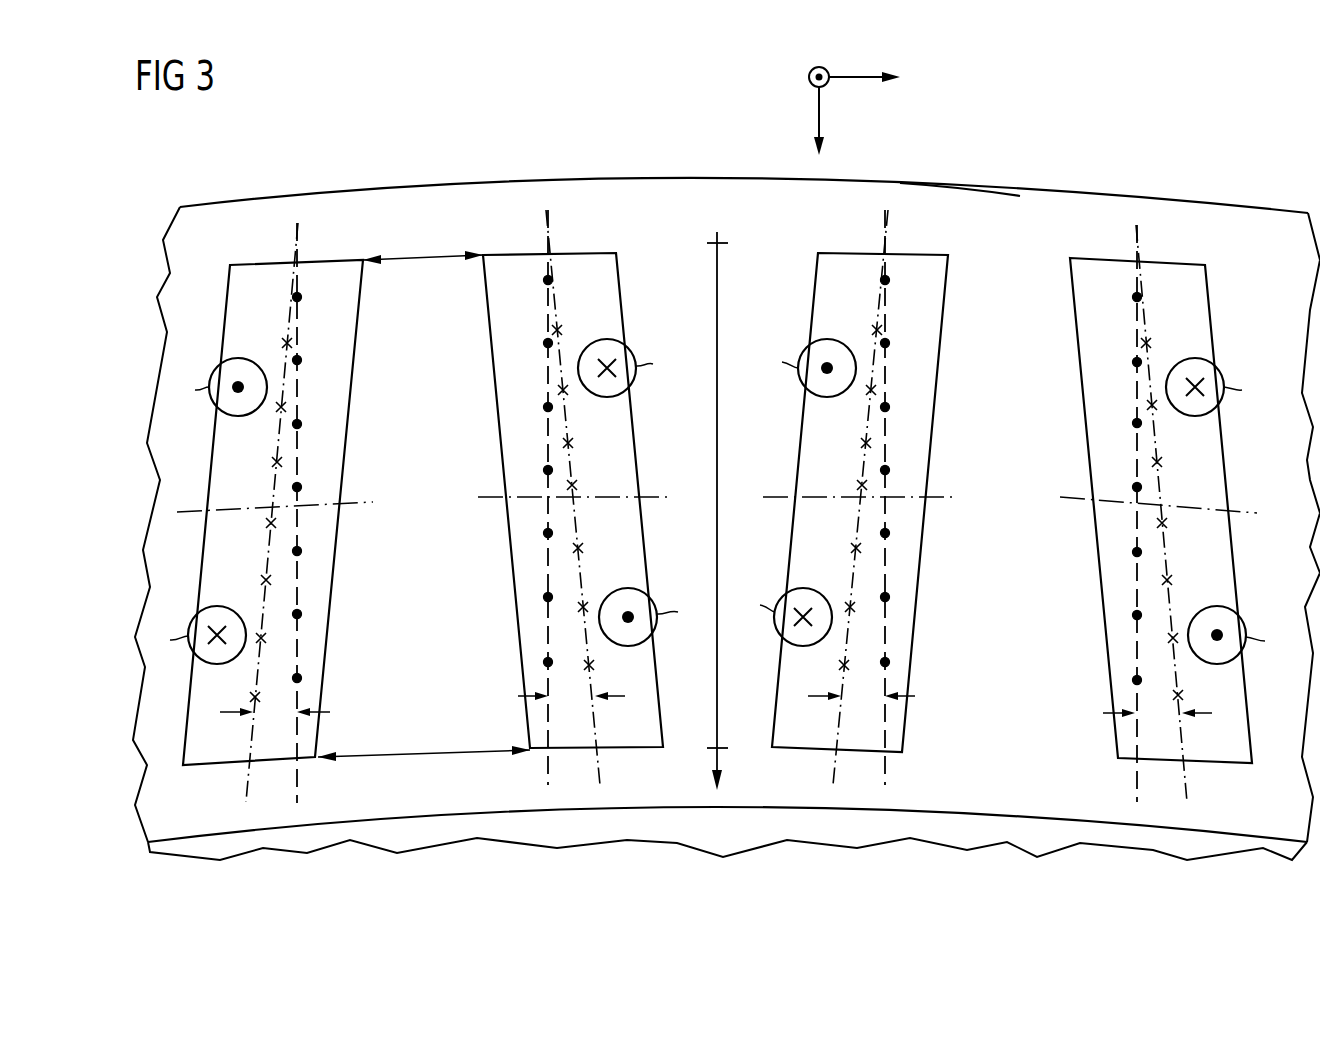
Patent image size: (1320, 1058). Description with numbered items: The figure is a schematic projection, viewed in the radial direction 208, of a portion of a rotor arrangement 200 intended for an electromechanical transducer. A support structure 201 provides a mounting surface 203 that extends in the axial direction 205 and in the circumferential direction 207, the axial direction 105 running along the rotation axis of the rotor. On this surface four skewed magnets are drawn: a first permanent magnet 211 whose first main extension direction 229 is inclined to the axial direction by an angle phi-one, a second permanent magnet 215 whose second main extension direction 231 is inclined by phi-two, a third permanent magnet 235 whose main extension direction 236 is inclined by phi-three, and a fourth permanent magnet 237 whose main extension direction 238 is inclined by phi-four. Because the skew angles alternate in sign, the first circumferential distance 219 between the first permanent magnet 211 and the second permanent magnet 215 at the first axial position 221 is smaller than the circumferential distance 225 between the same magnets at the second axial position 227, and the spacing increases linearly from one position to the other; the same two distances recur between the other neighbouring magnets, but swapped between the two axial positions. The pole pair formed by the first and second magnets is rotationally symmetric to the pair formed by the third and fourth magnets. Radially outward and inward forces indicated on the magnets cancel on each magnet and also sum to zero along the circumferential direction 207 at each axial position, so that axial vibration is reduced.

The rotor arrangement 200 is at (384, 146).
The support structure 201 is at (1043, 200).
The mounting surface 203 is at (958, 197).
The axial direction 205 is at (818, 122).
The circumferential direction 207 is at (858, 78).
The radial direction 208 is at (809, 76).
The first permanent magnet 211 is at (343, 370).
The second permanent magnet 215 is at (613, 317).
The third permanent magnet 235 is at (933, 307).
The fourth permanent magnet 237 is at (1200, 323).
The first circumferential distance 219 is at (422, 253).
The circumferential distance 225 is at (412, 752).
The first axial position 221 is at (718, 247).
The second axial position 227 is at (718, 737).
The axial direction 105 is at (712, 765).
The first main extension direction 229 is at (247, 782).
The second main extension direction 231 is at (602, 770).
The main extension direction 236 is at (832, 770).
The main extension direction 238 is at (1188, 785).